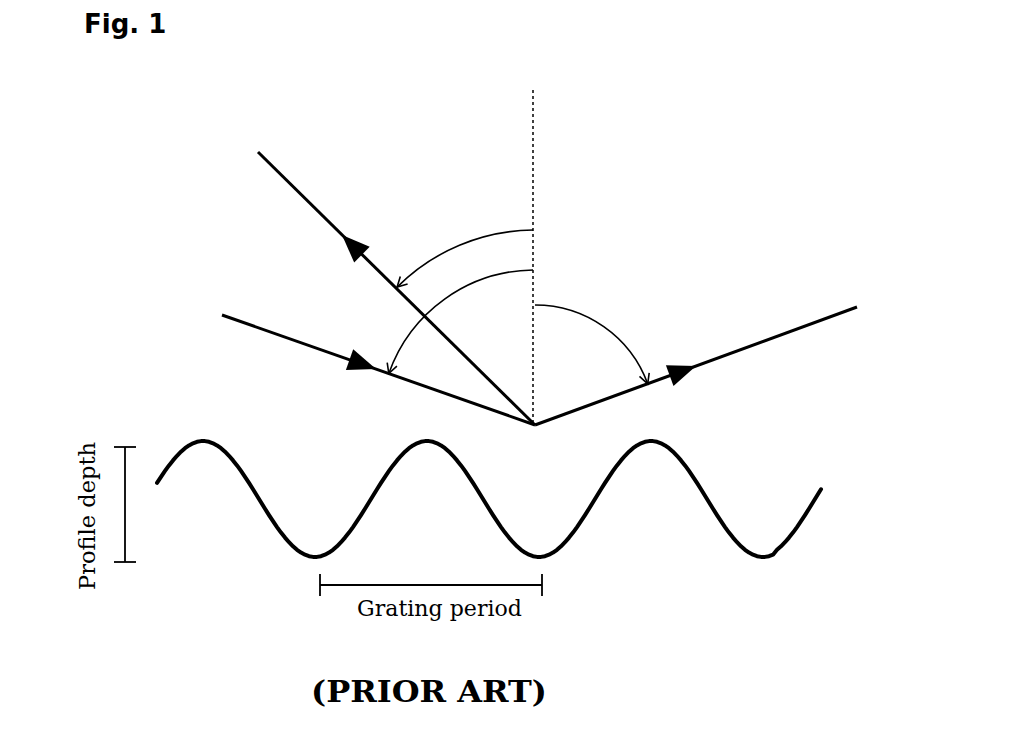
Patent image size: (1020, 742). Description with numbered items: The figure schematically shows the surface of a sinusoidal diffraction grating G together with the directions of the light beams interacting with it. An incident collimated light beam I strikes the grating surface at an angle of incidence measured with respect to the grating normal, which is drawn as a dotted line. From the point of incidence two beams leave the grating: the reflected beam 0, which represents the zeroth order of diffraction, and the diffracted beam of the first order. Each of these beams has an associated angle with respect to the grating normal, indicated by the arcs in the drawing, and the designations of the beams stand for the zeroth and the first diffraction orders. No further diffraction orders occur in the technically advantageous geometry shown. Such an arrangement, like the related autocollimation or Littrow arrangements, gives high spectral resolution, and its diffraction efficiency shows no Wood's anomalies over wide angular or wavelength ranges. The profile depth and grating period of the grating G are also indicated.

The incident collimated light beam I is at (378, 361).
The reflected beam 0 is at (696, 366).
The sinusoidal diffraction grating G is at (489, 499).